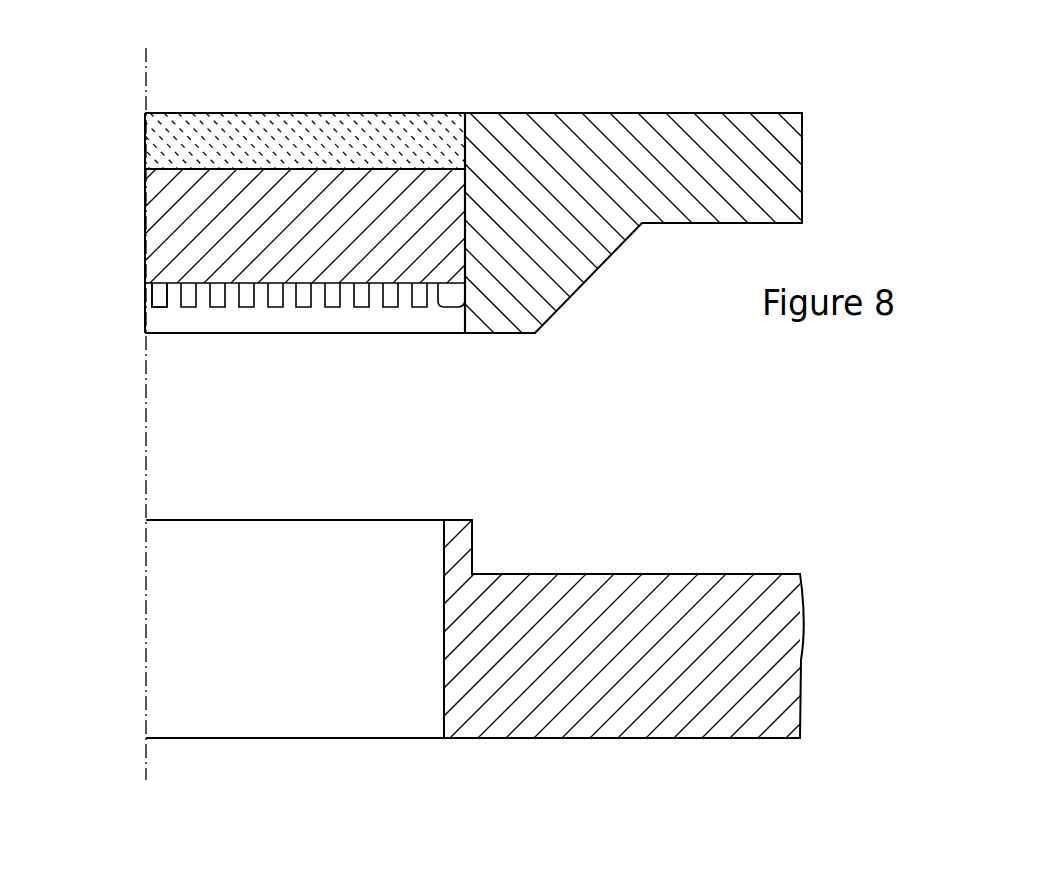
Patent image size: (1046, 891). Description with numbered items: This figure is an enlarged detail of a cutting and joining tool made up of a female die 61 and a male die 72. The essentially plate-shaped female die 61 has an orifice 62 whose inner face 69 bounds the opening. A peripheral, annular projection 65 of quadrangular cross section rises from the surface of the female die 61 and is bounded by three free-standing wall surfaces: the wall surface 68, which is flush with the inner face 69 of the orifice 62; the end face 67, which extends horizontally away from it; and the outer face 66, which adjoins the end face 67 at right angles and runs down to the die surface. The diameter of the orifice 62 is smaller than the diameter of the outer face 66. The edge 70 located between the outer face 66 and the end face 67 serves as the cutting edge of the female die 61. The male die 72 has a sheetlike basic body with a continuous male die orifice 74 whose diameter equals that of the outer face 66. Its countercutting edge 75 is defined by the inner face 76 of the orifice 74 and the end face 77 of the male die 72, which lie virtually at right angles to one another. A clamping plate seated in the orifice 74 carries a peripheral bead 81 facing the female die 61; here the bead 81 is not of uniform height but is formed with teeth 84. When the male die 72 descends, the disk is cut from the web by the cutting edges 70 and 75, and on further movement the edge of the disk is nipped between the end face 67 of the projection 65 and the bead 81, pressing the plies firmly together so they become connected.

The female die 61 is at (554, 700).
The orifice 62 is at (295, 629).
The peripheral projection 65 is at (463, 545).
The outer face 66 is at (483, 561).
The end face 67 is at (453, 510).
The wall surface 68 is at (433, 558).
The inner face 69 is at (433, 658).
The cutting edge 70 is at (486, 511).
The male die 72 is at (668, 129).
The male die orifice 74 is at (474, 193).
The countercutting edge 75 is at (272, 338).
The inner face 76 is at (455, 318).
The end face 77 is at (509, 343).
The peripheral bead 81 is at (157, 295).
The slot 84 is at (214, 314).